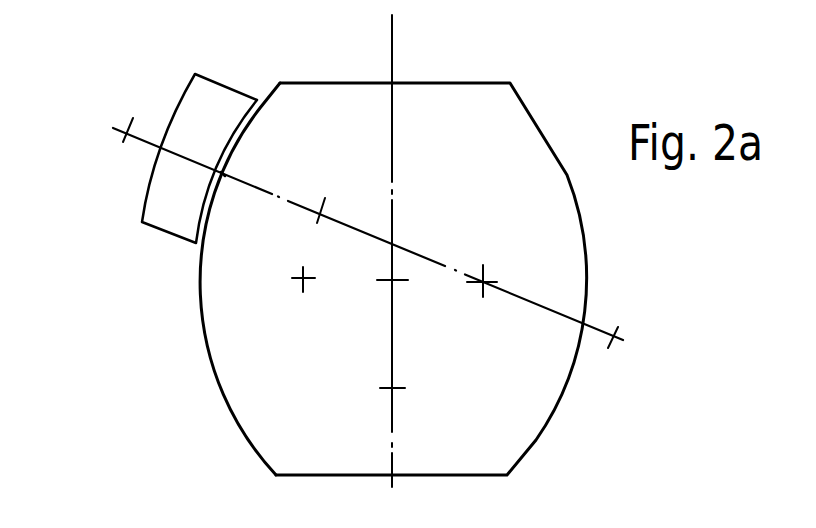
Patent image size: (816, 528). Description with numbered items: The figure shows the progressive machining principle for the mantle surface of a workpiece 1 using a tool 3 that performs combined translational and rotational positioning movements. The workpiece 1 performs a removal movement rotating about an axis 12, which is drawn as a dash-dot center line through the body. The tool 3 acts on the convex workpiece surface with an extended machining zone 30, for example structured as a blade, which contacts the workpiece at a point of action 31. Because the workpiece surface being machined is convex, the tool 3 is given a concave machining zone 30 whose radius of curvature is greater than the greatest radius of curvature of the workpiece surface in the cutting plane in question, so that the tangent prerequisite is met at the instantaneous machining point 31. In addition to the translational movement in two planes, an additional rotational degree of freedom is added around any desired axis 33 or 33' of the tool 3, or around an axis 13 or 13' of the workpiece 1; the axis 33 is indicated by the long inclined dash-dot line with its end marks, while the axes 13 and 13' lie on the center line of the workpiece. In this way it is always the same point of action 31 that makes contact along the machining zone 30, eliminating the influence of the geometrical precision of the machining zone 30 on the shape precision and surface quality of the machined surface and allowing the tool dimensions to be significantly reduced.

The workpiece 1 is at (233, 373).
The tool 3 is at (172, 202).
The axis 12 is at (393, 32).
The rotational axis of the workpiece 13 is at (369, 351).
The rotational axis of the workpiece 13' is at (446, 412).
The machining zone 30 is at (205, 238).
The point of action 31 is at (225, 174).
The rotational axis of the tool 33 is at (368, 238).
The rotational axis of the tool 33' is at (178, 74).